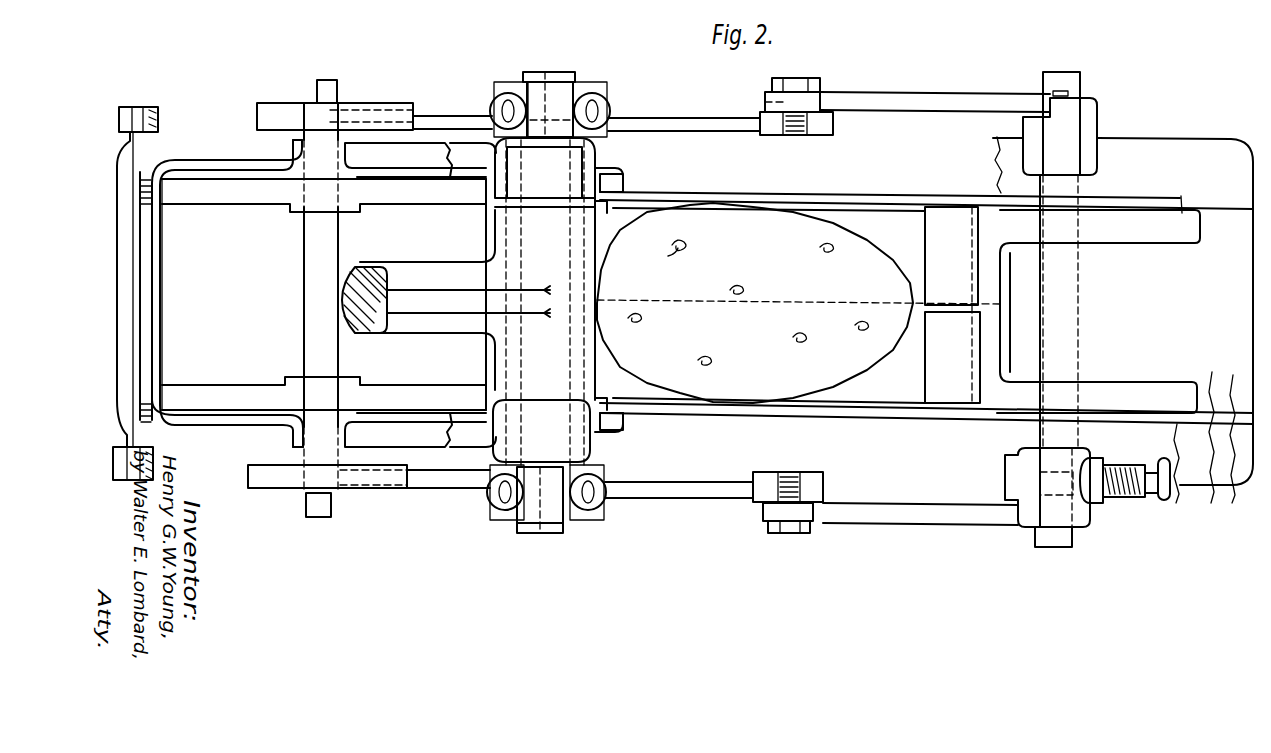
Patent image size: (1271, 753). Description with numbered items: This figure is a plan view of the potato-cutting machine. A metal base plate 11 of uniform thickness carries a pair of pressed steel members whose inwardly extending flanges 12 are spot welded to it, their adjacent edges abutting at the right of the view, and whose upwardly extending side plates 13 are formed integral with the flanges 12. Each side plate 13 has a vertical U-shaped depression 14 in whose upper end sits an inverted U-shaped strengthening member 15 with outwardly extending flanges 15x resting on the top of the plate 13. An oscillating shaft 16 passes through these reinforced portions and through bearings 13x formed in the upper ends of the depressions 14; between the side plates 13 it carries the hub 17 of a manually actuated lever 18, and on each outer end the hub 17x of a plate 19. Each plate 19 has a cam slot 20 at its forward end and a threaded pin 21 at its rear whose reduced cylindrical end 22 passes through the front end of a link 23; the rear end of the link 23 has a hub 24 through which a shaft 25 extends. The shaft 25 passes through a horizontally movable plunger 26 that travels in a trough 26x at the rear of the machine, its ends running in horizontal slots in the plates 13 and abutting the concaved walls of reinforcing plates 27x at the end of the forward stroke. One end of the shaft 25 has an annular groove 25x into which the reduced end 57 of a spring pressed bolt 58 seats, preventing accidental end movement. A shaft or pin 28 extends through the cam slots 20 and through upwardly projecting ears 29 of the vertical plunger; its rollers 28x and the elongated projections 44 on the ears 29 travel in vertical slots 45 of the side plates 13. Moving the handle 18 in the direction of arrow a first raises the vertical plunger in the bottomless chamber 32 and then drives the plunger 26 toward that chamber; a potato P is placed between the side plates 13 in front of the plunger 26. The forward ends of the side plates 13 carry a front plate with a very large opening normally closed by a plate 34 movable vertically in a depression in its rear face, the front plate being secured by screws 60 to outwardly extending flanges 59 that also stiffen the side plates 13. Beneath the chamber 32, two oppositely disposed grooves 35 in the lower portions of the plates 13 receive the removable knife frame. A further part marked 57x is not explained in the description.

The base plate 11 is at (1205, 146).
The inwardly extending flanges 12 is at (1215, 222).
The side plates 13 is at (1152, 420).
The bearings 13x is at (512, 80).
The vertical U-shaped depression 14 is at (620, 172).
The inverted U-shaped strengthening member 15 is at (598, 397).
The outwardly extending flanges 15x is at (597, 142).
The oscillating shaft 16 is at (550, 72).
The hub 17 is at (498, 367).
The hub 17x is at (575, 88).
The manually actuated lever 18 is at (400, 331).
The plate 19 is at (441, 118).
The cam slot 20 is at (950, 314).
The threaded pin 21 is at (800, 80).
The reduced cylindrical end 22 is at (762, 118).
The link 23 is at (906, 96).
The hub 24 is at (1098, 131).
The shaft 25 is at (1081, 83).
The annular peripheral groove 25x is at (1033, 484).
The horizontal movable plunger 26 is at (1127, 247).
The trough 26x is at (1212, 488).
The reinforcing plates 27x is at (630, 183).
The shaft or pin 28 is at (305, 353).
The rollers 28x is at (340, 104).
The ears 29 is at (258, 206).
The bottomless chamber 32 is at (183, 262).
The plate 34 is at (155, 175).
The grooves 35 is at (477, 125).
The elongated projections 44 is at (312, 112).
The vertical slots 45 is at (294, 147).
The reduced end 57 is at (1090, 462).
The bracket 57x is at (366, 296).
The spring pressed bolt 58 is at (1125, 514).
The outwardly extending flanges 59 is at (156, 150).
The screws 60 is at (130, 107).
The arrow a is at (959, 317).
The potato P is at (852, 380).